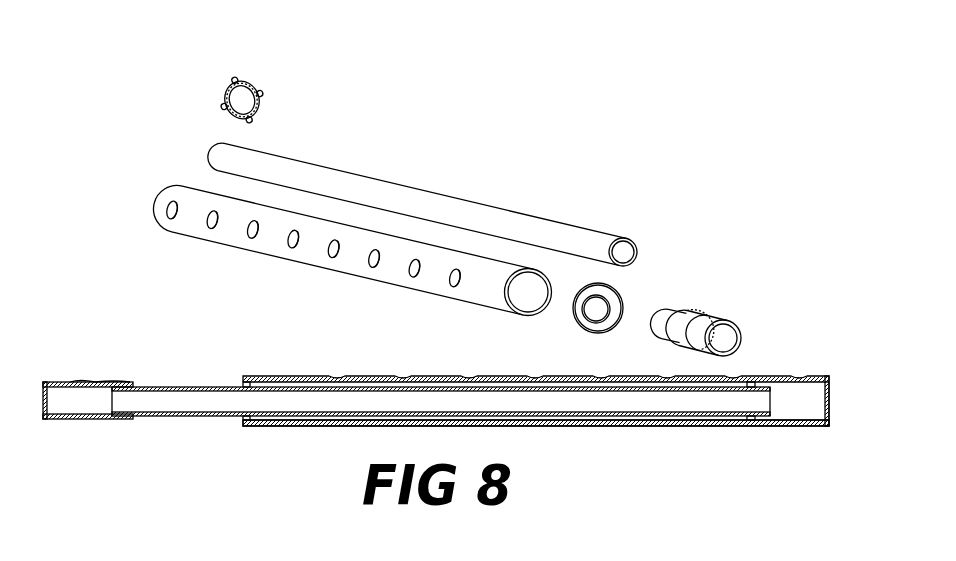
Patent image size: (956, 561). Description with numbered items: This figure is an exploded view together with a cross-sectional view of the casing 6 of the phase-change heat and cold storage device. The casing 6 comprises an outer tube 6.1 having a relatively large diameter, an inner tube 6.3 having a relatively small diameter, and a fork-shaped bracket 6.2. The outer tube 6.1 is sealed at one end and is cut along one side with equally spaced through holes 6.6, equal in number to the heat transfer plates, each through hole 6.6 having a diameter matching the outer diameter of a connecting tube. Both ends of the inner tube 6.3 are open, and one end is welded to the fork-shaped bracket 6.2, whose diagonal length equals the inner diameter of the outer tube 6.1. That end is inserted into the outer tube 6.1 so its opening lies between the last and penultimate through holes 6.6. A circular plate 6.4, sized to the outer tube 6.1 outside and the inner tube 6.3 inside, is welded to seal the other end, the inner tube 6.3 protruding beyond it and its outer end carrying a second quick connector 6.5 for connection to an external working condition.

The casing 6 is at (186, 393).
The outer tube 6.1 is at (183, 187).
The fork-shaped bracket 6.2 is at (240, 80).
The inner tube 6.3 is at (360, 186).
The circular plate 6.4 is at (592, 297).
The second quick connector 6.5 is at (700, 321).
The through hole 6.6 is at (207, 226).